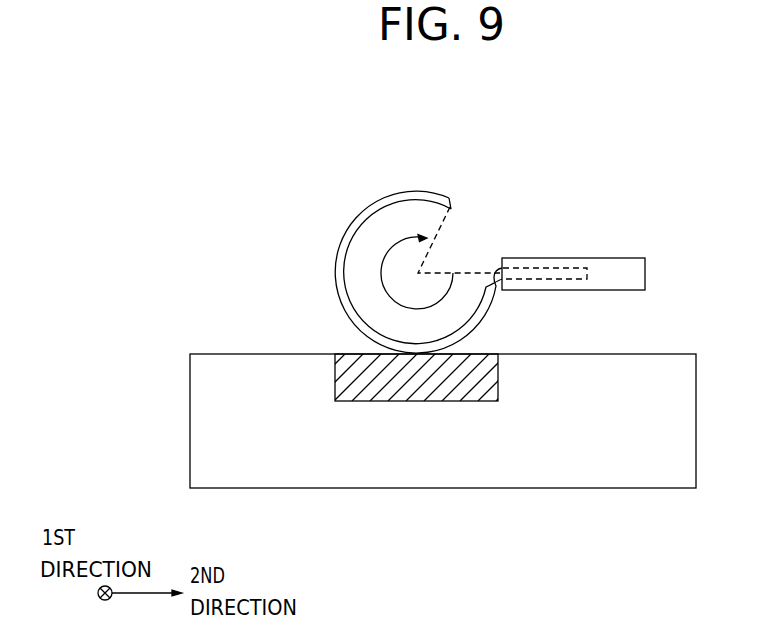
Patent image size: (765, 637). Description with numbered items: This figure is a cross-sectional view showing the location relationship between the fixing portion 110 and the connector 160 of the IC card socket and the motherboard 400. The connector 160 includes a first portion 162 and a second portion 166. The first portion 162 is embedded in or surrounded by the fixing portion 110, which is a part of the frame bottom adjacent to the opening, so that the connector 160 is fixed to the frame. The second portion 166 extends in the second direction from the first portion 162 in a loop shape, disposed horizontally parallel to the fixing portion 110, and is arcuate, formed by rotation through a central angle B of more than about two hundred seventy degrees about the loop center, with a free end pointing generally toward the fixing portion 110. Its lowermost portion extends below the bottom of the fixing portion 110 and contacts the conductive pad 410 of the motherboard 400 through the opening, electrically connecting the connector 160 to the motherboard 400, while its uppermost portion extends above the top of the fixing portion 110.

The connector 160 is at (560, 132).
The second portion 166 is at (416, 191).
The first portion 162 is at (537, 273).
The fixing portion 110 is at (613, 273).
The motherboard 400 is at (508, 457).
The conductive pad 410 is at (413, 377).